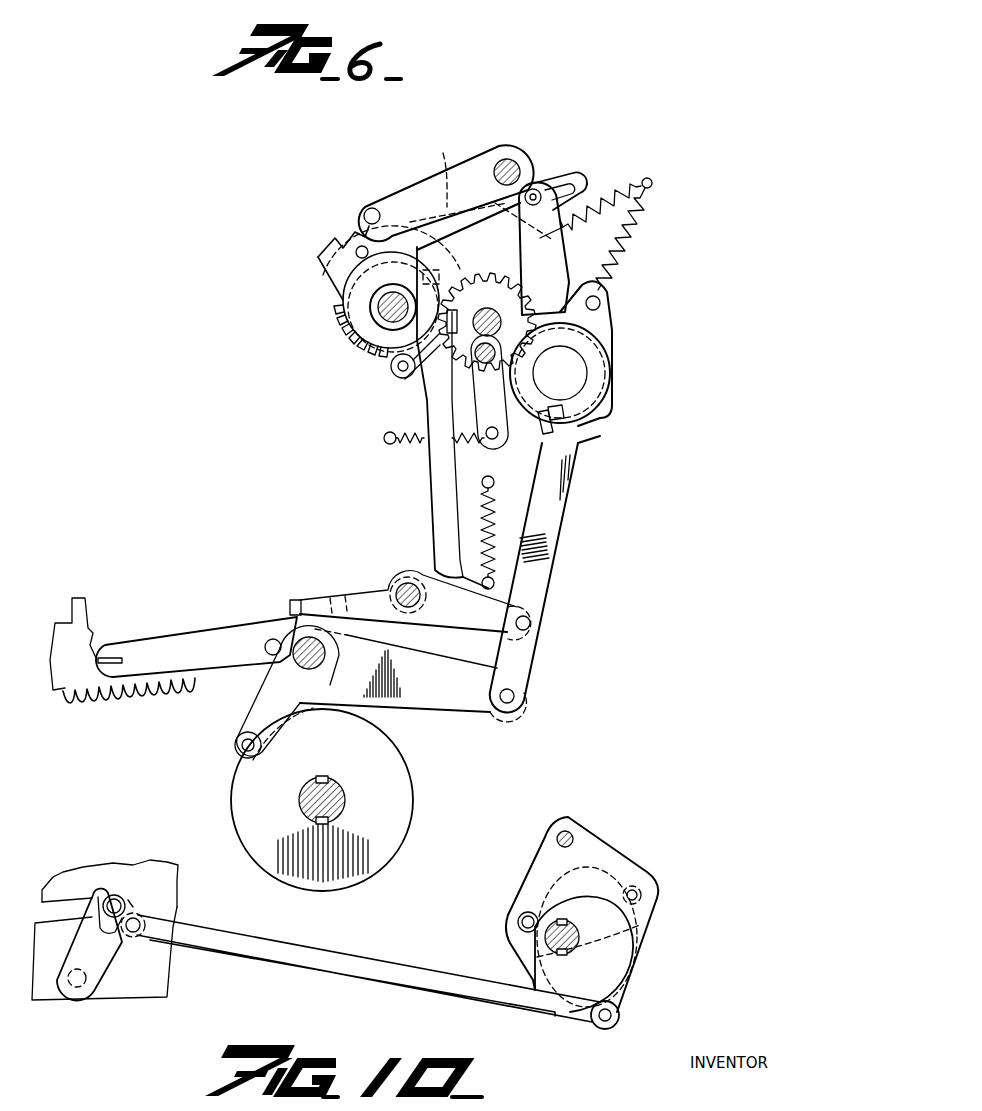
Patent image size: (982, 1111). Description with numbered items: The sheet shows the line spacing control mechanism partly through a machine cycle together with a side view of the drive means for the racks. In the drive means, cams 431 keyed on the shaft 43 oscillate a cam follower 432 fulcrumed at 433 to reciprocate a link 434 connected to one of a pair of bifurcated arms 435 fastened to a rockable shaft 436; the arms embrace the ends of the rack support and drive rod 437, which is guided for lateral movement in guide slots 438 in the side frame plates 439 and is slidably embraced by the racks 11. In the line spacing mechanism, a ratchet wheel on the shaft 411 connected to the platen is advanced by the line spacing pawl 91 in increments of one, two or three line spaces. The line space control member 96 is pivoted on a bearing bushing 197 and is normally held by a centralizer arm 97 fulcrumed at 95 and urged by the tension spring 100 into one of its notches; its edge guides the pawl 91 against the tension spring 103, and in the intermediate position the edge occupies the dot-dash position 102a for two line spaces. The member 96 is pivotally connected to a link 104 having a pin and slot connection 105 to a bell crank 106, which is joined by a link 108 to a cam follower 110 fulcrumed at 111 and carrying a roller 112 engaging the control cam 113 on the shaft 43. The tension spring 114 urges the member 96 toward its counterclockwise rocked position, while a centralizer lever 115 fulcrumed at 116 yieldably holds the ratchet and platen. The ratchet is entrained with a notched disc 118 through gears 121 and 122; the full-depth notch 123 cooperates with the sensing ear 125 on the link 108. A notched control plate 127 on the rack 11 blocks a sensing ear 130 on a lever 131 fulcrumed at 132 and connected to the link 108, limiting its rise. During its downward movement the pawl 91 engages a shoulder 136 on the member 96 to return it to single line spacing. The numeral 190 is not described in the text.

In FIG. 6, the rack 11 is at (62, 626).
In FIG. 6, the shaft 43 is at (312, 812).
In FIG. 10, the shaft 43 is at (572, 935).
In FIG. 6, the line spacing pawl 91 is at (427, 405).
In FIG. 6, the fulcrum of centralizer arm 95 is at (517, 165).
In FIG. 6, the line space control member 96 is at (330, 270).
In FIG. 6, the centralizer arm 97 is at (466, 172).
In FIG. 6, the tension spring 100 is at (649, 178).
In FIG. 6, the dot-dash line position of guide edge 102a is at (440, 168).
In FIG. 6, the tension spring 103 is at (495, 512).
In FIG. 6, the link 104 is at (538, 190).
In FIG. 6, the pin and slot connection 105 is at (573, 186).
In FIG. 6, the bell crank 106 is at (565, 242).
In FIG. 6, the link 108 is at (592, 486).
In FIG. 6, the cam follower 110 is at (456, 700).
In FIG. 6, the fulcrum of cam follower 111 is at (305, 672).
In FIG. 6, the roller 112 is at (235, 742).
In FIG. 6, the control cam 113 is at (404, 818).
In FIG. 6, the tension spring 114 is at (636, 245).
In FIG. 6, the centralizer lever 115 is at (396, 376).
In FIG. 6, the fulcrum of centralizer lever 116 is at (495, 360).
In FIG. 6, the notched disc 118 is at (600, 372).
In FIG. 6, the gear 121 is at (508, 290).
In FIG. 6, the gear 122 is at (620, 338).
In FIG. 6, the notch 123 is at (602, 410).
In FIG. 6, the sensing ear 125 is at (545, 435).
In FIG. 6, the notched control plate 127 is at (192, 637).
In FIG. 6, the sensing ear 130 is at (289, 602).
In FIG. 6, the lever 131 is at (350, 592).
In FIG. 6, the fulcrum of lever 132 is at (410, 578).
In FIG. 6, the shoulder 136 is at (450, 270).
In FIG. 6, the pawl 190 is at (380, 352).
In FIG. 6, the bearing bushing 197 is at (388, 326).
In FIG. 6, the shaft 411 is at (388, 318).
In FIG. 10, the cam 431 is at (540, 973).
In FIG. 10, the cam follower 432 is at (620, 850).
In FIG. 10, the fulcrum of cam follower 433 is at (571, 836).
In FIG. 10, the link 434 is at (462, 997).
In FIG. 10, the bifurcated arm 435 is at (112, 955).
In FIG. 10, the rockable shaft 436 is at (77, 990).
In FIG. 10, the rack support and drive rod 437 is at (120, 902).
In FIG. 10, the guide slot 438 is at (62, 886).
In FIG. 10, the side frame plate 439 is at (172, 880).